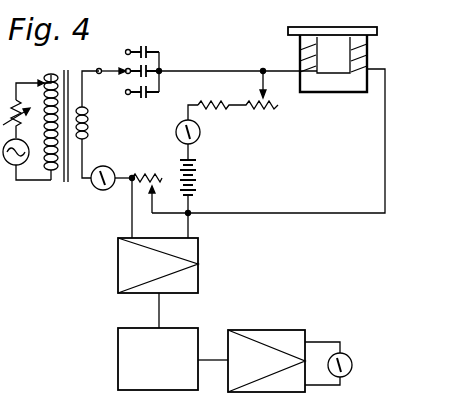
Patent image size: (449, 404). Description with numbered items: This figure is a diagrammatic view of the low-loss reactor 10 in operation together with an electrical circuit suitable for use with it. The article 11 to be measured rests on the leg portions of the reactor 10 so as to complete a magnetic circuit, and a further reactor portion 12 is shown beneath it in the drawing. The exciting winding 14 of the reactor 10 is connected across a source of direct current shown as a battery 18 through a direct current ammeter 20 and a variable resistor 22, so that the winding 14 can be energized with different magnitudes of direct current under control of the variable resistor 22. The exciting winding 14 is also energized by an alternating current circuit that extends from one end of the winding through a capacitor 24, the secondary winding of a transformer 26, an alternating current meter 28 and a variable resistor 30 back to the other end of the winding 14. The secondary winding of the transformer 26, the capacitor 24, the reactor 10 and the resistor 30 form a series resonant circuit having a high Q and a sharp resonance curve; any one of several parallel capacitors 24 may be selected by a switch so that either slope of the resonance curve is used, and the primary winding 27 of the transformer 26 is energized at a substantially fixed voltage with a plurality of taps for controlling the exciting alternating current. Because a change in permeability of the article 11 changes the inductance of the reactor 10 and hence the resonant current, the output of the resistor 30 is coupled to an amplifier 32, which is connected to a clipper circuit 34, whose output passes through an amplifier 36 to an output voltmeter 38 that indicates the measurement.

The low-loss reactor 10 is at (346, 127).
The article 11 is at (288, 31).
The container 12 is at (308, 82).
The exciting winding 14 is at (377, 46).
The battery 18 is at (196, 182).
The direct current ammeter 20 is at (176, 133).
The variable resistor 22 is at (238, 102).
The capacitor 24 is at (207, 58).
The transformer 26 is at (71, 114).
The primary winding 27 is at (50, 178).
The alternating current meter 28 is at (108, 190).
The variable resistor 30 is at (146, 195).
The amplifier 32 is at (118, 268).
The clipper circuit 34 is at (118, 365).
The amplifier 36 is at (266, 349).
The output voltmeter 38 is at (342, 363).